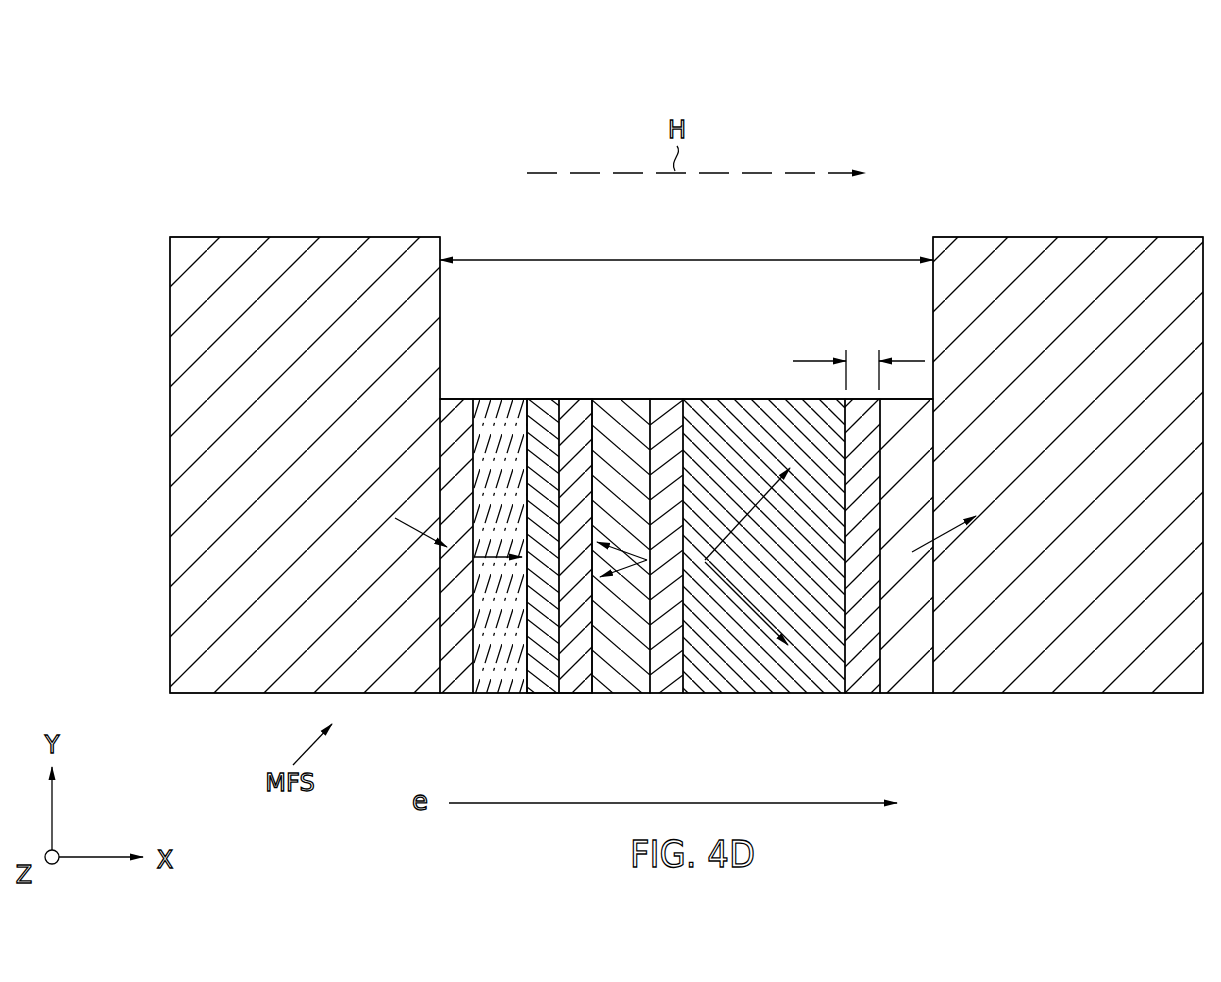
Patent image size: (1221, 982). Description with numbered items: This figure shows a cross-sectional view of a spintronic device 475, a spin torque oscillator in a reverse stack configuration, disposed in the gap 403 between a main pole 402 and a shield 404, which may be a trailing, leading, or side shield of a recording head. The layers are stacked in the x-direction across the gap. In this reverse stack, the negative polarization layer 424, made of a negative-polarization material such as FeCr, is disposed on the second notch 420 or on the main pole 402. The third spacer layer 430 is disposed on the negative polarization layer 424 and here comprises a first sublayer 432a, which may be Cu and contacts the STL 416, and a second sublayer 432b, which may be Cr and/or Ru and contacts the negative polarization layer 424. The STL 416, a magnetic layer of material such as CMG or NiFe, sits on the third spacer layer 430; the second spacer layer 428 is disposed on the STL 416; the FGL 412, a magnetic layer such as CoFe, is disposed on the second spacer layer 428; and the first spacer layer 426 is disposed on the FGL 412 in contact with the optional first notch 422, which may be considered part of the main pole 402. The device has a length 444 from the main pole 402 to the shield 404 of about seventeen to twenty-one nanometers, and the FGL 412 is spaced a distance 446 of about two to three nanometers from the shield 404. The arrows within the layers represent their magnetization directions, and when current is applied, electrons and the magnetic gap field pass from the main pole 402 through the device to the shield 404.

The spintronic device 475 is at (150, 77).
The gap 403 is at (438, 145).
The main pole 402 is at (283, 467).
The shield 404 is at (1047, 467).
The length 444 is at (675, 259).
The distance 446 is at (863, 359).
The first sublayer 432a is at (571, 399).
The second sublayer 432b is at (539, 399).
The second spacer layer 428 is at (661, 399).
The FGL 412 is at (743, 564).
The second notch 420 is at (460, 670).
The negative polarization layer 424 is at (493, 683).
The third spacer layer 430 is at (592, 697).
The STL 416 is at (632, 685).
The first spacer layer 426 is at (858, 678).
The first notch 422 is at (916, 680).